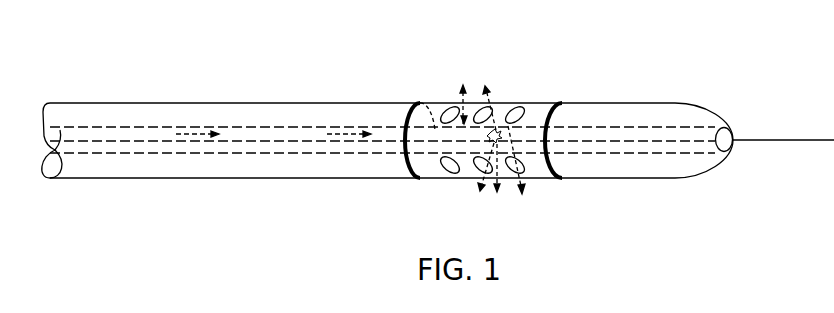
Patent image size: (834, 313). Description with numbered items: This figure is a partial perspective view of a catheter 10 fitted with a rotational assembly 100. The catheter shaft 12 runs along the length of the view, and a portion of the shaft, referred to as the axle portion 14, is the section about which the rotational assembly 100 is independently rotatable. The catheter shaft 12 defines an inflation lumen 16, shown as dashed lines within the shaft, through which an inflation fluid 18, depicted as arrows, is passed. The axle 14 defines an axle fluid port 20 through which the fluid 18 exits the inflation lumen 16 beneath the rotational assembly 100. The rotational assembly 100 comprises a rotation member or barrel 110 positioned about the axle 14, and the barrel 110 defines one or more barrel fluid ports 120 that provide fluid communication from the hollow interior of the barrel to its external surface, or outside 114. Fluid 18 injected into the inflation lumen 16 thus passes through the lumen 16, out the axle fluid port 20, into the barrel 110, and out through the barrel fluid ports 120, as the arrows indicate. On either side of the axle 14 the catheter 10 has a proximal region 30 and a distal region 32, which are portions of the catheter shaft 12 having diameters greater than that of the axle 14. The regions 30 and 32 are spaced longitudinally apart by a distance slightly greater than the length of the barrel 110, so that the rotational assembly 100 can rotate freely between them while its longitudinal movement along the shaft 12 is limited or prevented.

The catheter 10 is at (150, 87).
The catheter shaft 12 is at (454, 103).
The axle portion 14 is at (418, 103).
The inflation lumen 16 is at (238, 153).
The inflation fluid 18 is at (182, 132).
The axle fluid port 20 is at (504, 118).
The proximal region 30 is at (335, 179).
The distal region 32 is at (650, 102).
The rotational assembly 100 is at (547, 92).
The barrel 110 is at (443, 177).
The outside of the barrel 114 is at (543, 172).
The barrel fluid ports 120 is at (511, 175).